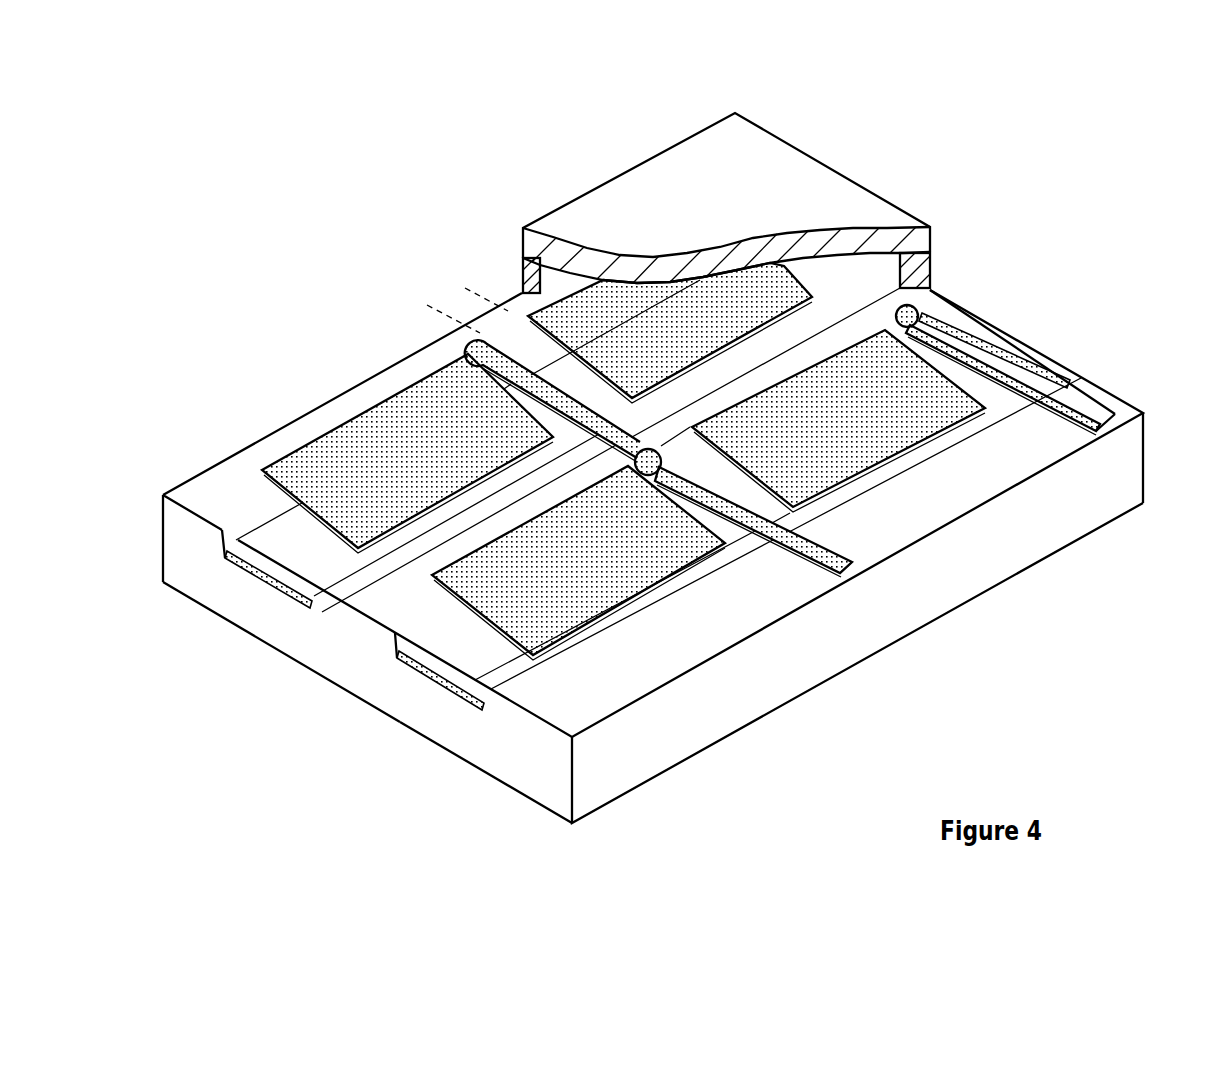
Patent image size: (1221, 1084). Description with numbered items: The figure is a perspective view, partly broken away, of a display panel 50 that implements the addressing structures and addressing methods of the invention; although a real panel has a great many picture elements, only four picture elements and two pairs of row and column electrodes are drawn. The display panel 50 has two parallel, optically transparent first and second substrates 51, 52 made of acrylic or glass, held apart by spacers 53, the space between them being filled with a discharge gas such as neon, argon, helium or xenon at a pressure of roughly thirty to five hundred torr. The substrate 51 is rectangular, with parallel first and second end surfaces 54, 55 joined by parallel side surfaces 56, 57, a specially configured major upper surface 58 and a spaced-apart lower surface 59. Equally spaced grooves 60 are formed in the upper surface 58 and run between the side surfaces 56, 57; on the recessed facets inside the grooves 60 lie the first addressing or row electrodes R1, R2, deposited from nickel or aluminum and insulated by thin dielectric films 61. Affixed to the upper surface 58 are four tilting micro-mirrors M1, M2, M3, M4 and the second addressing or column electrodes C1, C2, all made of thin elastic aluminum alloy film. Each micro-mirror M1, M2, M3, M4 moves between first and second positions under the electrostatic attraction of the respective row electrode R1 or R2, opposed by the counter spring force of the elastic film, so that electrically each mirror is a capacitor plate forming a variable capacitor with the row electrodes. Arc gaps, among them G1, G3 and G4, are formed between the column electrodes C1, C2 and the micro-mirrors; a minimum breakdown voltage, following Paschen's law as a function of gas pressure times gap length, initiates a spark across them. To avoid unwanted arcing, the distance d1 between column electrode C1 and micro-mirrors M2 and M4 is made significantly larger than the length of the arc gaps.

The display panel 50 is at (348, 260).
The first substrate 51 is at (312, 690).
The second substrate 52 is at (772, 158).
The spacers 53 is at (521, 272).
The first end surface 54 is at (162, 545).
The second end surface 55 is at (588, 777).
The side surface 56 is at (526, 766).
The side surface 57 is at (1145, 458).
The major upper surface 58 is at (242, 486).
The lower surface 59 is at (481, 775).
The grooves 60 is at (232, 540).
The dielectric films 61 is at (290, 590).
The tilting micro-mirror M1 is at (433, 468).
The tilting micro-mirror M2 is at (528, 316).
The tilting micro-mirror M3 is at (563, 587).
The tilting micro-mirror M4 is at (827, 443).
The arc gap G1 is at (462, 360).
The arc gap G3 is at (793, 624).
The arc gap G4 is at (1048, 410).
The row electrode R1 is at (300, 568).
The row electrode R2 is at (435, 686).
The column electrode C1 is at (845, 578).
The column electrode C2 is at (1105, 425).
The distance d1 is at (467, 310).